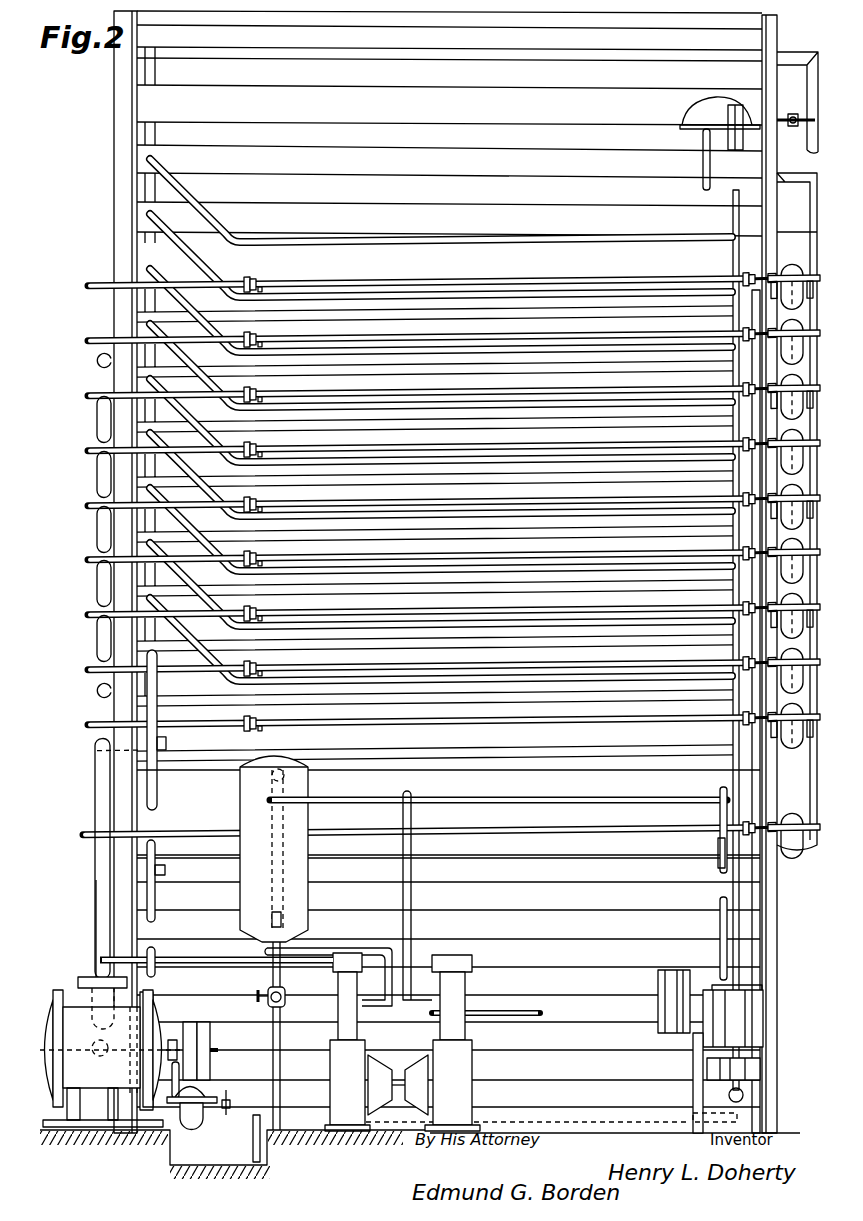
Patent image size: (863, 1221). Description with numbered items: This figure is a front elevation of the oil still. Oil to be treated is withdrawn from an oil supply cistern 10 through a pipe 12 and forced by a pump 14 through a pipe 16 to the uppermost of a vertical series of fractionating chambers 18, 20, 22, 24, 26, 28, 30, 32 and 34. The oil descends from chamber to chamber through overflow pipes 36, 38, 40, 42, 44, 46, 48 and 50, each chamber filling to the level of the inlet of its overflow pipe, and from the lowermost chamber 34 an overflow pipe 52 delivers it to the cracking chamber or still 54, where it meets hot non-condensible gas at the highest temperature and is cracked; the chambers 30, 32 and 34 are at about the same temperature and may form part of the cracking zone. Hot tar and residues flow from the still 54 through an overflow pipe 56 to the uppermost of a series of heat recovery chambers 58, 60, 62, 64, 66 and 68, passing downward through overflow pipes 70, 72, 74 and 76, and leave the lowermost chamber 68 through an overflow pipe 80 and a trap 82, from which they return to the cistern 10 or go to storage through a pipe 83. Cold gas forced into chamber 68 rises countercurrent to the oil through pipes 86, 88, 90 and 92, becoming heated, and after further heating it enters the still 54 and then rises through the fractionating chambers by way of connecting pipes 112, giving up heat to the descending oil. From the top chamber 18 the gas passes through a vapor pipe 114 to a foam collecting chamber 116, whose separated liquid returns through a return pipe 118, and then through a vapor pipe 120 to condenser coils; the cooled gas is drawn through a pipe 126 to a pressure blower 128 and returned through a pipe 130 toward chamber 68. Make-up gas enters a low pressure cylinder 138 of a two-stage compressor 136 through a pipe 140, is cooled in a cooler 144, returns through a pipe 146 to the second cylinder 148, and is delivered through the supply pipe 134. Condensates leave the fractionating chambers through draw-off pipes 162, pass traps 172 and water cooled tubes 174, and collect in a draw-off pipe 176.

The oil supply cistern 10 is at (168, 1153).
The pipe 12 is at (607, 1115).
The pump 14 is at (748, 1092).
The pipe 16 is at (733, 745).
The fractionating chamber 18 is at (348, 139).
The fractionating chamber 20 is at (340, 212).
The fractionating chamber 22 is at (116, 268).
The fractionating chamber 24 is at (116, 316).
The fractionating chamber 26 is at (155, 386).
The fractionating chamber 28 is at (155, 435).
The fractionating chamber 30 is at (150, 492).
The fractionating chamber 32 is at (150, 540).
The fractionating chamber 34 is at (168, 598).
The overflow pipe 36 is at (185, 186).
The overflow pipe 38 is at (185, 242).
The overflow pipe 40 is at (185, 297).
The overflow pipe 42 is at (185, 352).
The overflow pipe 44 is at (185, 407).
The overflow pipe 46 is at (185, 461).
The overflow pipe 48 is at (185, 516).
The overflow pipe 50 is at (185, 571).
The overflow pipe 52 is at (185, 628).
The cracking chamber or still 54 is at (160, 656).
The overflow pipe 56 is at (157, 706).
The heat recovery chamber 58 is at (182, 782).
The heat recovery chamber 60 is at (172, 846).
The heat recovery chamber 62 is at (198, 888).
The heat recovery chamber 64 is at (182, 948).
The heat recovery chamber 66 is at (252, 1018).
The heat recovery chamber 68 is at (262, 1072).
The overflow pipe 70 is at (718, 793).
The overflow pipe 72 is at (155, 893).
The overflow pipe 74 is at (708, 950).
The overflow pipe 76 is at (160, 992).
The overflow pipe 80 is at (180, 1090).
The trap 82 is at (195, 1128).
The pipe 83 is at (228, 1112).
The pipe 86 is at (160, 975).
The pipe 88 is at (718, 926).
The pipe 90 is at (160, 868).
The pipe 92 is at (716, 812).
The connecting pipe 112 is at (135, 232).
The vapor pipe 114 is at (730, 148).
The foam collecting chamber 116 is at (598, 96).
The return pipe 118 is at (710, 132).
The vapor pipe 120 is at (510, 56).
The pipe 126 is at (96, 880).
The pressure blower 128 is at (90, 1090).
The pipe 130 is at (98, 1056).
The supply pipe 134 is at (256, 965).
The two-stage compressor 136 is at (392, 1110).
The low pressure cylinder 138 is at (462, 982).
The pipe 140 is at (411, 924).
The cooler 144 is at (308, 874).
The pipe 146 is at (350, 948).
The second cylinder 148 is at (340, 983).
The draw-off pipe 162 is at (816, 212).
The trap 172 is at (786, 262).
The water cooled tube 174 is at (302, 680).
The draw-off pipe 176 is at (86, 288).